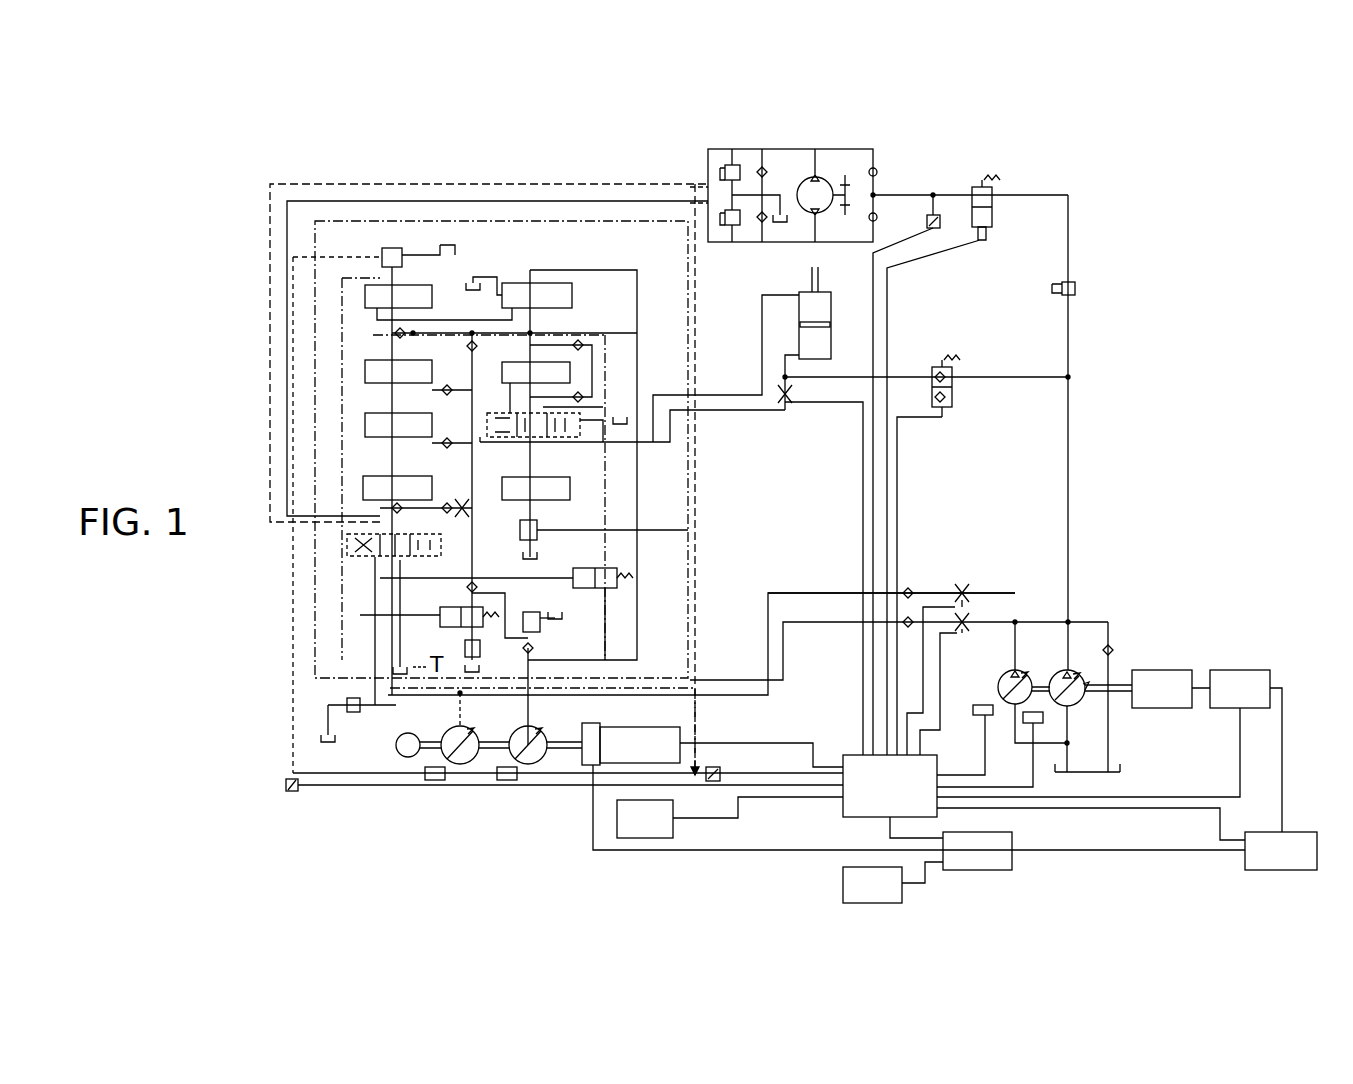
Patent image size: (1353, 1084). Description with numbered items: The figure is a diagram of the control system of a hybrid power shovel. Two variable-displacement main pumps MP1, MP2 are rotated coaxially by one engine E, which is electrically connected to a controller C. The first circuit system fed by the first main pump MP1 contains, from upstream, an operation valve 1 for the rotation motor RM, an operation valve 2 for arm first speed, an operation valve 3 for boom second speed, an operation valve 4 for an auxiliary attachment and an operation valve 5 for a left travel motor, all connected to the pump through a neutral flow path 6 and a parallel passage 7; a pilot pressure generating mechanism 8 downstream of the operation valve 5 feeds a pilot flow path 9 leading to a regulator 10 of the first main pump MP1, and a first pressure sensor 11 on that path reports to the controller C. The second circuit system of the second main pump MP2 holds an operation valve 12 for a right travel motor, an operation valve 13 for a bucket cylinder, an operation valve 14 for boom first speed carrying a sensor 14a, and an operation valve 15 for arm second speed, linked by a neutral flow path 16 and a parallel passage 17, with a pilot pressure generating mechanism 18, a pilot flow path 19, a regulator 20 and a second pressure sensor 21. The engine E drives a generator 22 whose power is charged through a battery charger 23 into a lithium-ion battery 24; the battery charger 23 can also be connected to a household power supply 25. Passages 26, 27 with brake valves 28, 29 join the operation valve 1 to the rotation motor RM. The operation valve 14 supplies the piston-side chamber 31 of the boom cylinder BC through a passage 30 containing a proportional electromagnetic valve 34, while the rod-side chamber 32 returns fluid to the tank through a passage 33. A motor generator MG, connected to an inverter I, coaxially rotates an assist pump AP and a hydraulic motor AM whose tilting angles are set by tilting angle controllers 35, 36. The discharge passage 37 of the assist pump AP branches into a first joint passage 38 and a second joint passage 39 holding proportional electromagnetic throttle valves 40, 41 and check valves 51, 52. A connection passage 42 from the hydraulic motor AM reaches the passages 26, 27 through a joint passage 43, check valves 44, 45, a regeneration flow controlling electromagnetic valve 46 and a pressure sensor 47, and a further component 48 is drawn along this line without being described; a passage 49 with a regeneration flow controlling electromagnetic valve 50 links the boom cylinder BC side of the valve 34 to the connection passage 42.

The operation valve for rotation motor 1 is at (347, 548).
The operation valve for arm first speed 2 is at (363, 487).
The operation valve for boom second speed 3 is at (365, 422).
The operation valve for auxiliary attachment 4 is at (365, 368).
The operation valve for left travel motor 5 is at (365, 292).
The neutral flow path 6 is at (392, 270).
The parallel passage 7 is at (472, 460).
The pilot pressure generating mechanism 8 is at (392, 248).
The pilot flow path 9 is at (293, 637).
The regulator 10 is at (435, 780).
The first pressure sensor 11 is at (286, 784).
The operation valve for right travel motor 12 is at (572, 283).
The operation valve for bucket 13 is at (570, 372).
The operation valve for boom first speed 14 is at (580, 437).
The sensor 14a is at (632, 838).
The operation valve for arm second speed 15 is at (570, 488).
The neutral flow path 16 is at (537, 520).
The parallel passage 17 is at (592, 348).
The pilot pressure generating mechanism 18 is at (537, 538).
The pilot flow path 19 is at (698, 550).
The regulator 20 is at (507, 780).
The second pressure sensor 21 is at (712, 781).
The generator 22 is at (595, 723).
The battery charger 23 is at (1012, 862).
The lithium-ion battery 24 is at (1245, 866).
The household power supply 25 is at (843, 885).
The passage 26 is at (787, 149).
The passage 27 is at (785, 242).
The brake valve 28 is at (735, 165).
The brake valve 29 is at (732, 225).
The passage 30 is at (728, 412).
The piston-side chamber 31 is at (812, 350).
The rod-side chamber 32 is at (818, 303).
The passage 33 is at (762, 343).
The proportional electromagnetic valve 34 is at (783, 407).
The tilting angle controller 35 is at (983, 717).
The tilting angle controller 36 is at (1043, 718).
The discharge passage 37 is at (1015, 622).
The first joint passage 38 is at (792, 593).
The second joint passage 39 is at (830, 622).
The first proportional electromagnetic throttle valve 40 is at (962, 631).
The second proportional electromagnetic throttle valve 41 is at (962, 584).
The connection passage 42 is at (1068, 420).
The joint passage 43 is at (1068, 238).
The check valve 44 is at (875, 170).
The check valve 45 is at (870, 222).
The regeneration flow controlling electromagnetic valve 46 is at (990, 187).
The pressure sensor 47 is at (940, 215).
The pressure sensor 48 is at (1075, 282).
The passage 49 is at (912, 395).
The regeneration flow controlling electromagnetic valve 50 is at (945, 410).
The check valve 51 is at (905, 627).
The check valve 52 is at (910, 588).
The rotation motor RM is at (820, 185).
The boom cylinder BC is at (832, 343).
The first main pump MP1 is at (449, 735).
The second main pump MP2 is at (519, 735).
The assist pump AP is at (998, 688).
The hydraulic motor AM is at (1070, 680).
The motor generator MG is at (1165, 670).
The inverter I is at (1218, 670).
The engine E is at (680, 735).
The controller C is at (843, 817).